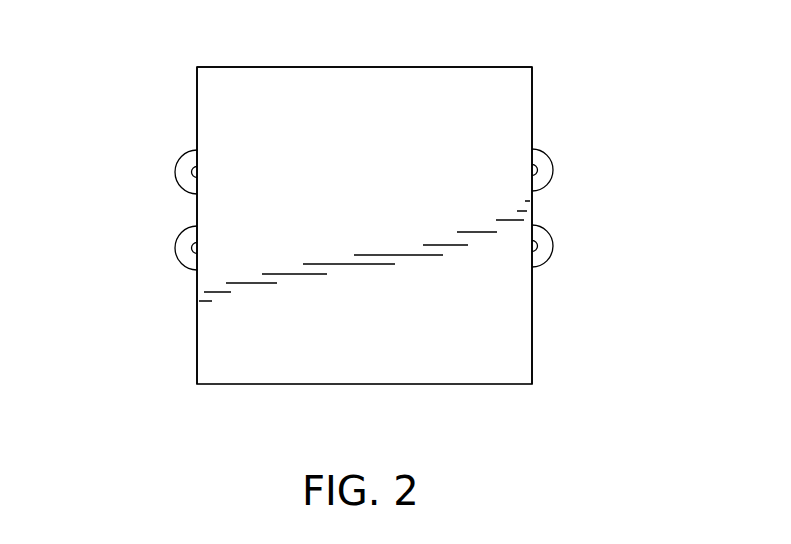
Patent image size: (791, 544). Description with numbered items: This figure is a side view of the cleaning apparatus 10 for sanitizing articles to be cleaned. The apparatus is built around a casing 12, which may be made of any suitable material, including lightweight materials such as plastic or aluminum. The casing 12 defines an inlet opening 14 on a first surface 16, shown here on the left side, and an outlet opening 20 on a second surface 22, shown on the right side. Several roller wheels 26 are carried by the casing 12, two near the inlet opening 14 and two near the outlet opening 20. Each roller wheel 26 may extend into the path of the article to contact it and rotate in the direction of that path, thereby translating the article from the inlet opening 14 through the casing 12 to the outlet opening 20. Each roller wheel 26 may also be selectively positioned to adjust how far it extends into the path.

The cleaning apparatus 10 is at (600, 441).
The casing 12 is at (507, 80).
The inlet opening 14 is at (195, 210).
The first surface 16 is at (196, 82).
The outlet opening 20 is at (532, 210).
The second surface 22 is at (533, 107).
The roller wheel 26 is at (177, 163).